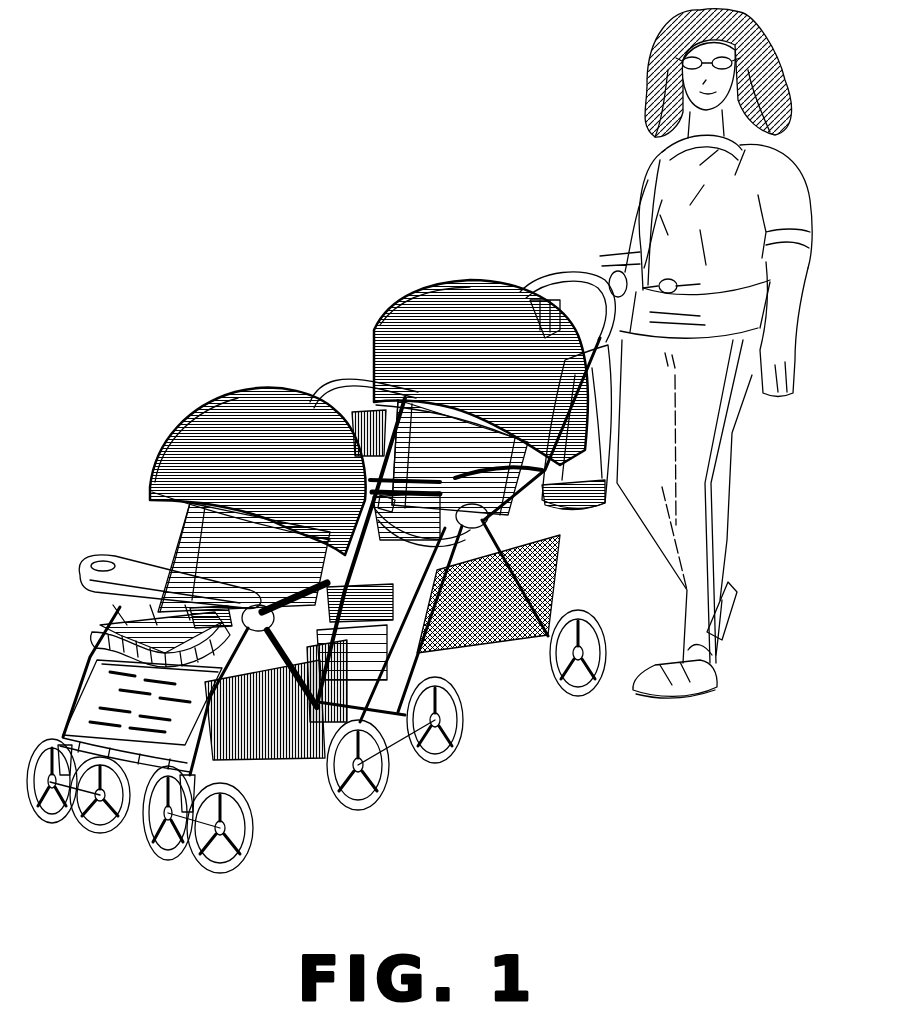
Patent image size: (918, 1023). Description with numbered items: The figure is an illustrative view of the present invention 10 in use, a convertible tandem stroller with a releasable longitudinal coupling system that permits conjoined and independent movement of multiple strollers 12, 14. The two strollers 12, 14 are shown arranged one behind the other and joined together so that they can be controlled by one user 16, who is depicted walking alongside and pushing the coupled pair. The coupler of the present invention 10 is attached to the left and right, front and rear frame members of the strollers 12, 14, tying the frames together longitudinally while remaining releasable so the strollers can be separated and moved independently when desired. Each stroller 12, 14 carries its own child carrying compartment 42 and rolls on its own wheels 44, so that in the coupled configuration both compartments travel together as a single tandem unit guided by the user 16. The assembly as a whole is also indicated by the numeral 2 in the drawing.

The tandem stroller assembly 2 is at (325, 543).
The present invention 10 is at (325, 543).
The stroller 12 is at (200, 402).
The stroller 14 is at (436, 297).
The user 16 is at (797, 163).
The child carrying compartment 42 is at (187, 533).
The wheels 44 is at (393, 712).